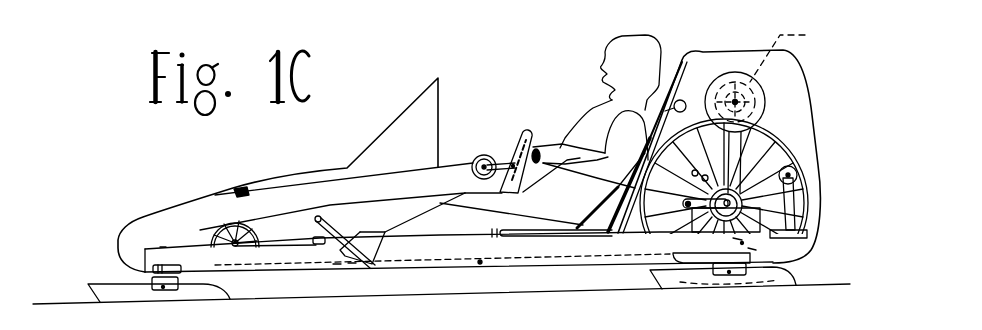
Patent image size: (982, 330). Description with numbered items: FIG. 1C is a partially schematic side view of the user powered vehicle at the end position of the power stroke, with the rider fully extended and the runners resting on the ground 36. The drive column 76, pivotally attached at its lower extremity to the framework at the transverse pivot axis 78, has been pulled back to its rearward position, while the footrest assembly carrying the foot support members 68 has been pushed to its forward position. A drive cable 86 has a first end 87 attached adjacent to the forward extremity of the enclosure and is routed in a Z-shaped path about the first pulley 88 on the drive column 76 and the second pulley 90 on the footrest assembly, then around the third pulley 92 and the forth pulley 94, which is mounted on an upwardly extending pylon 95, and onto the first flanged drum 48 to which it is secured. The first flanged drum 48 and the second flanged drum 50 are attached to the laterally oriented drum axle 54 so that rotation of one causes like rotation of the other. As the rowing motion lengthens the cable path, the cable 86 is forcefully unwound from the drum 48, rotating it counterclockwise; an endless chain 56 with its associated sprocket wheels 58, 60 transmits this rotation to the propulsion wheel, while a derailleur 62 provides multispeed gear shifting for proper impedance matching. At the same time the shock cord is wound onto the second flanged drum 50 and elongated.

The ground 36 is at (48, 303).
The first flanged drum 48 is at (752, 82).
The second flanged drum 50 is at (762, 92).
The drum axle 54 is at (735, 100).
The endless chain 56 is at (737, 197).
The sprocket wheel 58 is at (786, 54).
The sprocket wheel 60 is at (748, 192).
The derailleur 62 is at (688, 200).
The foot support members 68 is at (340, 248).
The drive column 76 is at (516, 153).
The transverse pivot axis 78 is at (480, 264).
The drive cable 86 is at (310, 182).
The first end 87 is at (240, 191).
The first pulley 88 is at (474, 158).
The second pulley 90 is at (222, 223).
The third pulley 92 is at (797, 267).
The forth pulley 94 is at (798, 182).
The pylon 95 is at (795, 218).